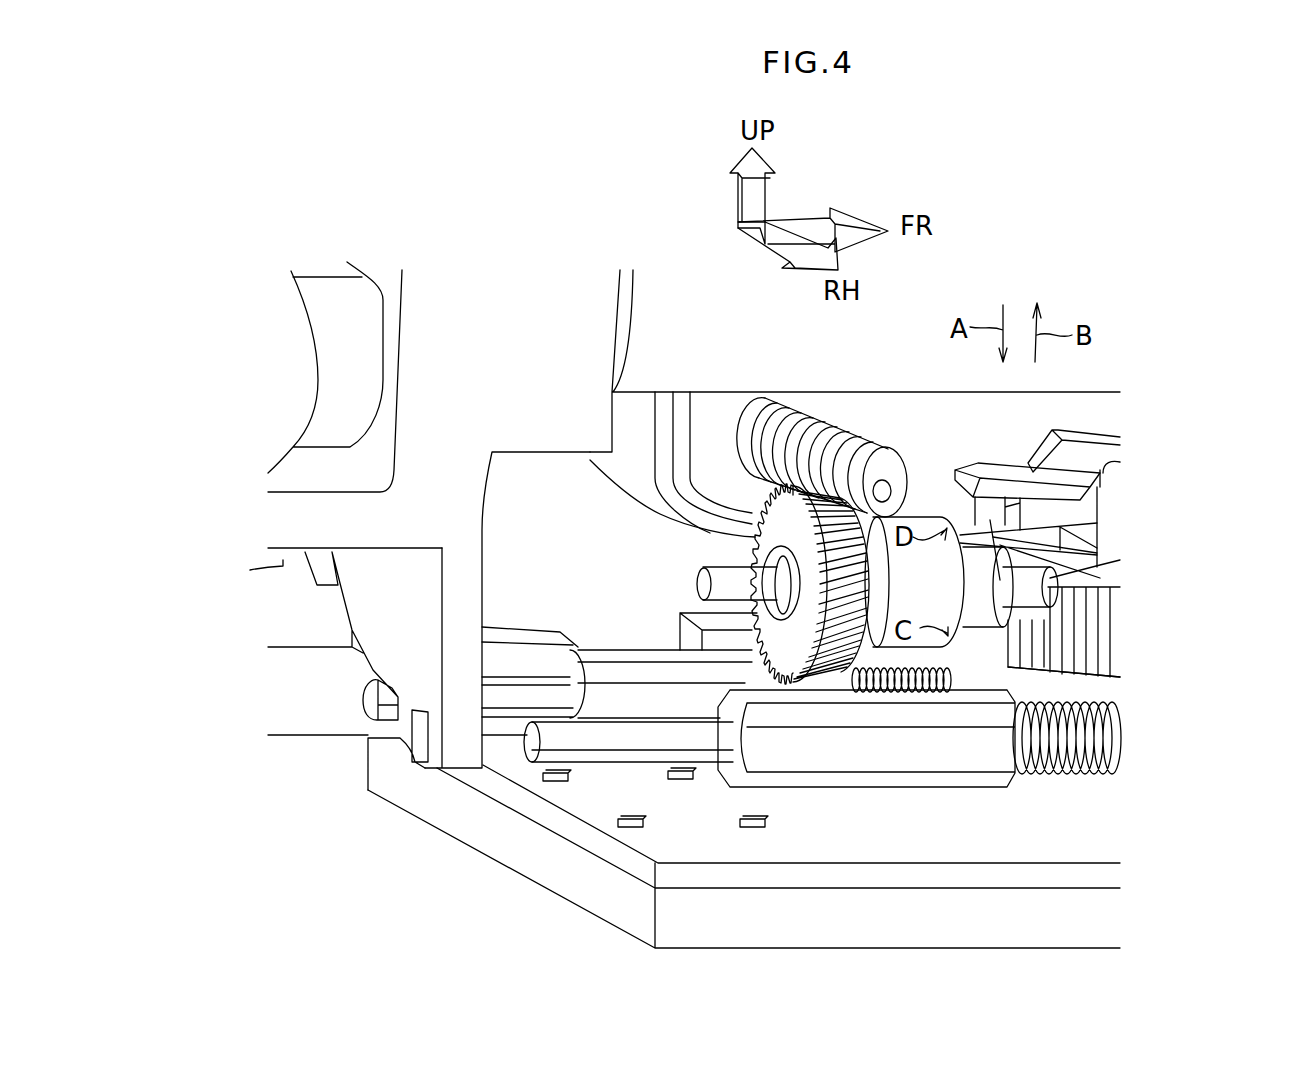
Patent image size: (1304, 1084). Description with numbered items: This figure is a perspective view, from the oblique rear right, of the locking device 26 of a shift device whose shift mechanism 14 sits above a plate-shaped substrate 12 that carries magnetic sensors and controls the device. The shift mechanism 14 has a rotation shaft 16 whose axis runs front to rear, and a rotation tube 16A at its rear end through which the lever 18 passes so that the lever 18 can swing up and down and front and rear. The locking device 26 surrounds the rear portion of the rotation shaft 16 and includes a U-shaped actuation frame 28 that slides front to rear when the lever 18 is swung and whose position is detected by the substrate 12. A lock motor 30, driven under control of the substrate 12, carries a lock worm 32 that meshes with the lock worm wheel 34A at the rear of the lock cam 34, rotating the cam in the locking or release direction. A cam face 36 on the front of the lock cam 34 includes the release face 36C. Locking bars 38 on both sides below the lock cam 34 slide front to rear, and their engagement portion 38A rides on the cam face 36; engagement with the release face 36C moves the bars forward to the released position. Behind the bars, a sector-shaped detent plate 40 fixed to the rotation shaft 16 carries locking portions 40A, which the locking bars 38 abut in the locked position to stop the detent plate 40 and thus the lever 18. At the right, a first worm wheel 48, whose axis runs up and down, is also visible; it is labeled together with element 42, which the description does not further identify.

The substrate 12 is at (640, 835).
The shift mechanism 14 is at (1050, 832).
The rotation shaft 16 is at (990, 393).
The rotation tube 16A is at (288, 552).
The lever 18 is at (324, 272).
The locking device 26 is at (597, 560).
The actuation frame 28 is at (295, 740).
The lock motor 30 is at (655, 503).
The lock worm 32 is at (883, 447).
The lock cam 34 is at (936, 500).
The lock worm wheel 34A is at (750, 548).
The cam face 36 is at (970, 555).
The release face 36C is at (963, 583).
The locking bars 38 is at (613, 648).
The engagement portion 38A is at (1005, 682).
The detent plate 40 is at (483, 585).
The locking portions 40A is at (317, 587).
The biasing member 42 is at (1064, 672).
The first worm wheel 48 is at (1113, 672).